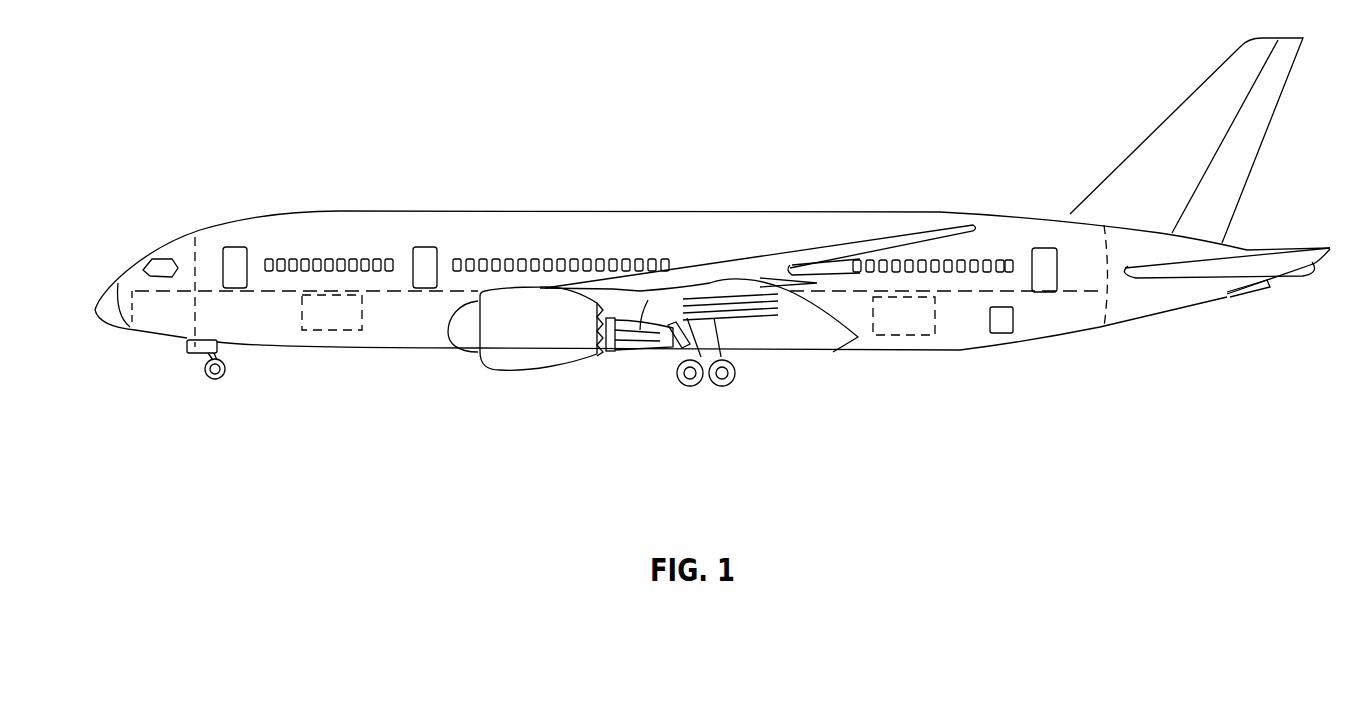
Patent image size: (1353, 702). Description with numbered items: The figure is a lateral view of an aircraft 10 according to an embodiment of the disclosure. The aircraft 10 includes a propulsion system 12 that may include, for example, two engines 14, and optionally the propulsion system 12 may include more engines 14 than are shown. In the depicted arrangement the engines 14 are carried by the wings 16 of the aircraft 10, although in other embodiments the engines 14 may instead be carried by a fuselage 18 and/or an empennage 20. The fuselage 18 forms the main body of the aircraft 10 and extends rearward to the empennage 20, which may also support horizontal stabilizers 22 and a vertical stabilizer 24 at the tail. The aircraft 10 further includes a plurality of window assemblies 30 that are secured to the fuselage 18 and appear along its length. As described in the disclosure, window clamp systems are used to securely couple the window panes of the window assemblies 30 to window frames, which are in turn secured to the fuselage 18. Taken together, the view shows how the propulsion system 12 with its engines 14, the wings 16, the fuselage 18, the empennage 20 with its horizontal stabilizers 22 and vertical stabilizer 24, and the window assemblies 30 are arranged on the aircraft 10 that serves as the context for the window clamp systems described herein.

The aircraft 10 is at (133, 124).
The propulsion system 12 is at (496, 380).
The engines 14 is at (554, 375).
The wings 16 is at (673, 317).
The fuselage 18 is at (509, 219).
The empennage 20 is at (1072, 212).
The horizontal stabilizers 22 is at (1276, 110).
The vertical stabilizer 24 is at (1275, 248).
The window assemblies 30 is at (335, 242).